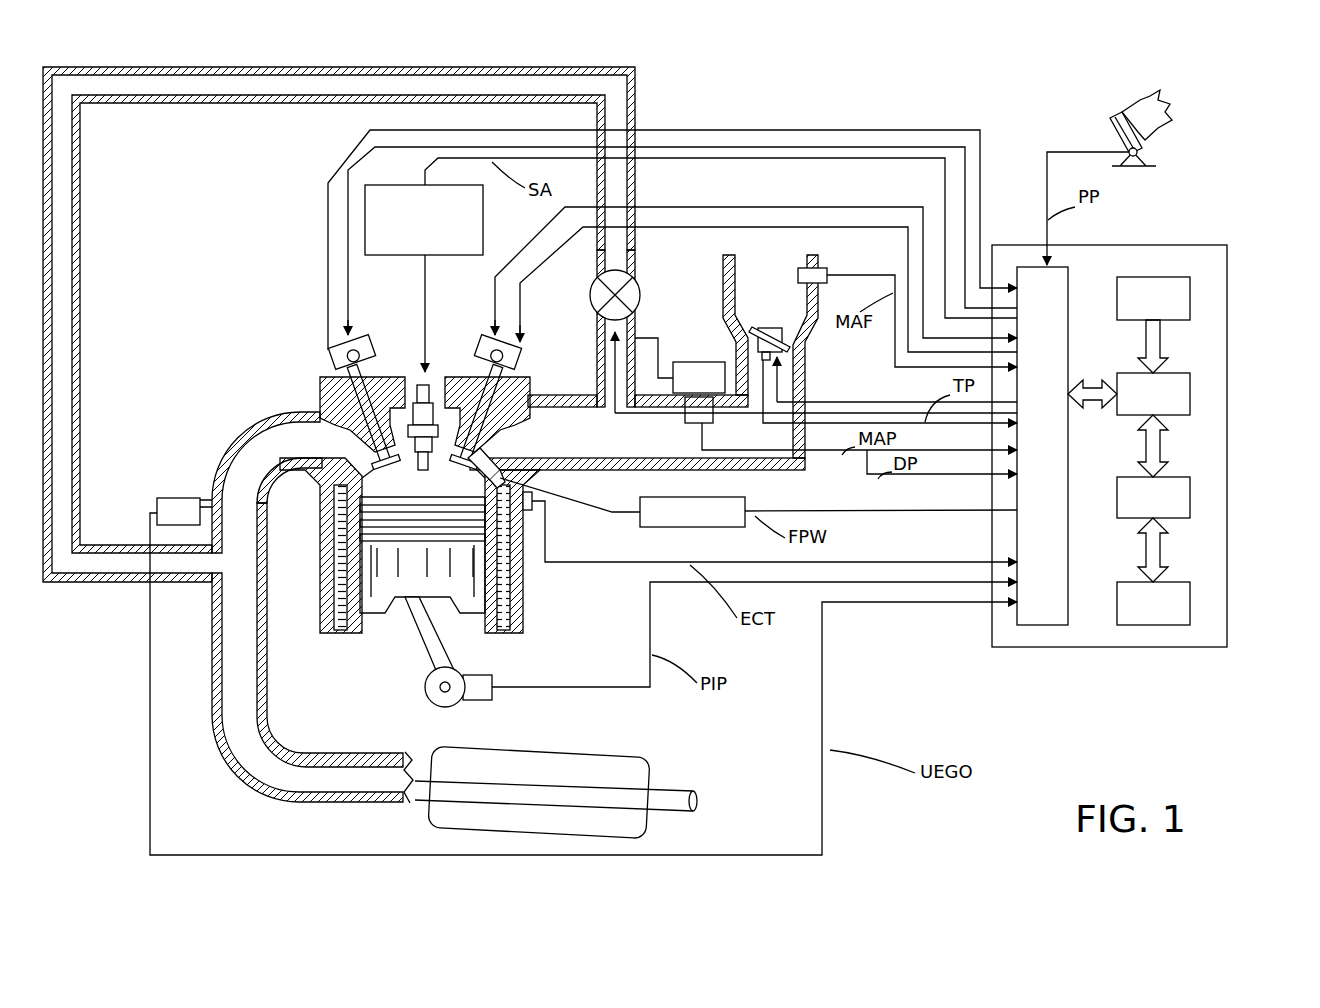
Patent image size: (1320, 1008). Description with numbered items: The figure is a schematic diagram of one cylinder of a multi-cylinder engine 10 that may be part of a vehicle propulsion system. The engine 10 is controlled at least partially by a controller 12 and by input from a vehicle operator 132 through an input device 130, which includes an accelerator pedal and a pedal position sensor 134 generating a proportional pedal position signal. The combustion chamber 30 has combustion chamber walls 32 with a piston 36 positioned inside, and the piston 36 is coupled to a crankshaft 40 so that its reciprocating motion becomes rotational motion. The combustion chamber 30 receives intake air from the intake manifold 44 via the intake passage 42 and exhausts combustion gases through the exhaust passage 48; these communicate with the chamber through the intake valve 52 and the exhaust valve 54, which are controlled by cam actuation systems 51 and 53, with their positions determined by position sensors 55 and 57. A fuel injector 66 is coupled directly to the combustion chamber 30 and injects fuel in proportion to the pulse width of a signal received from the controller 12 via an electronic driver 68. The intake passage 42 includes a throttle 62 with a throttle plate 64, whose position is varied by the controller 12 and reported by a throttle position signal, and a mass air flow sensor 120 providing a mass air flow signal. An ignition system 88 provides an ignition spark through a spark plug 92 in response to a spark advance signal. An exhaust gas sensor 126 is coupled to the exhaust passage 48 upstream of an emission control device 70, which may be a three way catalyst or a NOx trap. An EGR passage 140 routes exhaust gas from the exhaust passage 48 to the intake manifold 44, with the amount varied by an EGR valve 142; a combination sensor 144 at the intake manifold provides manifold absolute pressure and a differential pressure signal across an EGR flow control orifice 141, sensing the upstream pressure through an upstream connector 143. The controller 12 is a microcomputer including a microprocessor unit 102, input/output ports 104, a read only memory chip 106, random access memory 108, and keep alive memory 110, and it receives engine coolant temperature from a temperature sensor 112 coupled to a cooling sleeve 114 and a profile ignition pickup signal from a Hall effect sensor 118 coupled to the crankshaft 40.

The engine 10 is at (228, 282).
The controller 12 is at (1152, 434).
The combustion chamber 30 is at (328, 580).
The combustion chamber walls 32 is at (363, 638).
The piston 36 is at (405, 625).
The crankshaft 40 is at (694, 665).
The intake passage 42 is at (779, 309).
The intake manifold 44 is at (624, 447).
The exhaust passage 48 is at (296, 451).
The cam actuation system 51 is at (490, 345).
The intake valve 52 is at (478, 447).
The cam actuation system 53 is at (370, 343).
The exhaust valve 54 is at (373, 452).
The position sensor 55 is at (514, 360).
The position sensor 57 is at (338, 362).
The throttle 62 is at (790, 342).
The throttle plate 64 is at (790, 355).
The fuel injector 66 is at (527, 482).
The electronic driver 68 is at (657, 528).
The emission control device 70 is at (603, 760).
The ignition system 88 is at (378, 185).
The spark plug 92 is at (430, 385).
The microprocessor unit 102 is at (1192, 393).
The input/output ports 104 is at (1100, 267).
The read only memory chip 106 is at (1192, 296).
The random access memory 108 is at (1192, 497).
The keep alive memory 110 is at (1192, 598).
The temperature sensor 112 is at (535, 510).
The cooling sleeve 114 is at (507, 585).
The Hall effect sensor 118 is at (478, 703).
The mass air flow sensor 120 is at (820, 268).
The exhaust gas sensor 126 is at (157, 505).
The input device 130 is at (1166, 173).
The vehicle operator 132 is at (1165, 112).
The pedal position sensor 134 is at (1150, 153).
The EGR passage 140 is at (333, 67).
The EGR flow control orifice 141 is at (590, 402).
The EGR valve 142 is at (628, 302).
The upstream connector 143 is at (654, 338).
The combination sensor 144 is at (683, 362).